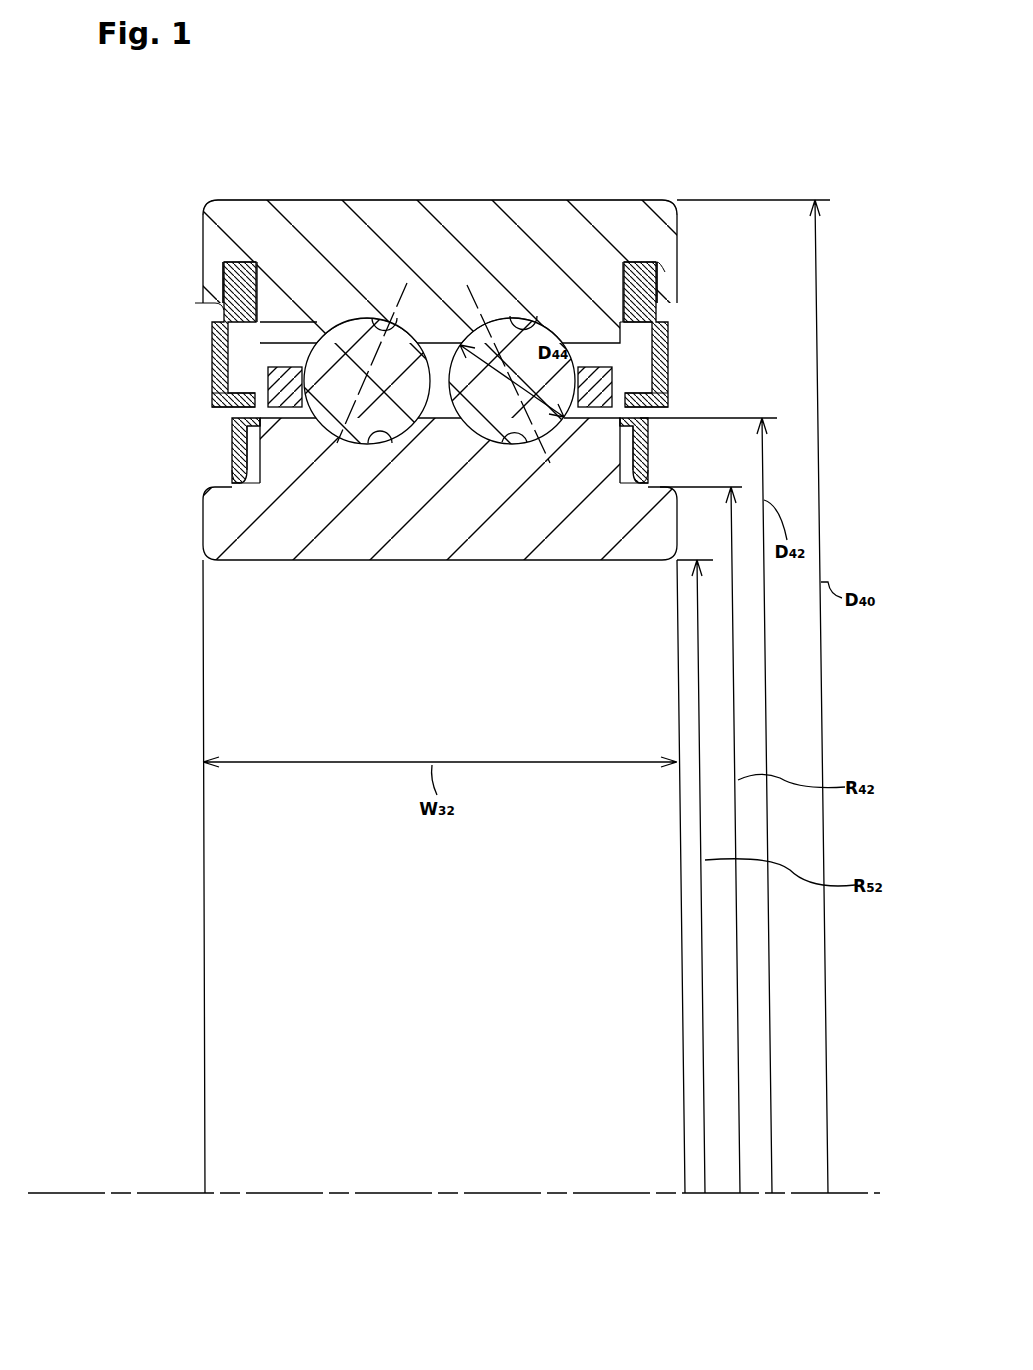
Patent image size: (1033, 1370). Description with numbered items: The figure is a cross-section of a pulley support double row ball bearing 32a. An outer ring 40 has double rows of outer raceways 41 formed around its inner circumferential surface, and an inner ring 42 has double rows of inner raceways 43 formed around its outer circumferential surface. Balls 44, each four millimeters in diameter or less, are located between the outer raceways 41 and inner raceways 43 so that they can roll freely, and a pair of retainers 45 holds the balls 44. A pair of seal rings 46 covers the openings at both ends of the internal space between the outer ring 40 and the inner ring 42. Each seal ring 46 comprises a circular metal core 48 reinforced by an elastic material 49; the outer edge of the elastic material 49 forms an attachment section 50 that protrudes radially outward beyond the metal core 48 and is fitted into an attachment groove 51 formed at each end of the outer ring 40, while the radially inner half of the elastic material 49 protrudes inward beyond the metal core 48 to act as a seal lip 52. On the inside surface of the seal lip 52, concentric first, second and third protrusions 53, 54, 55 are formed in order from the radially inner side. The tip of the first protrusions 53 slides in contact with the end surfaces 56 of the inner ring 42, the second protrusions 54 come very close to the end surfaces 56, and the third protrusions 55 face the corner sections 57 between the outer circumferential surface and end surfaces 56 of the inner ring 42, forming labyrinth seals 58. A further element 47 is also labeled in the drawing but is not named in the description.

The pulley support double row ball bearing 32a is at (657, 148).
The outer ring 40 is at (436, 255).
The outer raceways 41 is at (500, 338).
The inner ring 42 is at (508, 545).
The inner raceways 43 is at (390, 442).
The balls 44 is at (340, 346).
The retainers 45 is at (210, 392).
The seal rings 46 is at (232, 420).
The seal core plate 47 is at (620, 343).
The metal core 48 is at (215, 305).
The elastic material 49 is at (208, 404).
The attachment section 50 is at (240, 260).
The attachment groove 51 is at (221, 266).
The seal lip 52 is at (236, 430).
The first protrusions 53 is at (246, 480).
The second protrusions 54 is at (257, 470).
The third protrusions 55 is at (284, 365).
The end surfaces 56 is at (240, 470).
The corner sections 57 is at (215, 416).
The labyrinth seals 58 is at (298, 430).